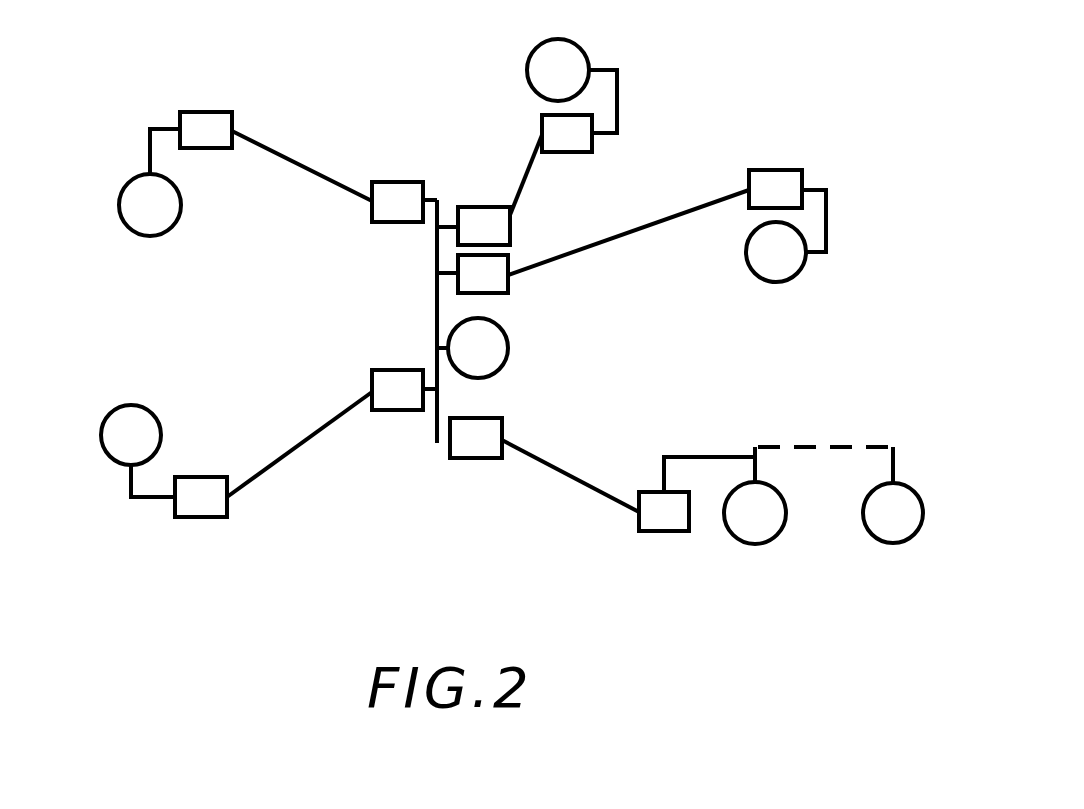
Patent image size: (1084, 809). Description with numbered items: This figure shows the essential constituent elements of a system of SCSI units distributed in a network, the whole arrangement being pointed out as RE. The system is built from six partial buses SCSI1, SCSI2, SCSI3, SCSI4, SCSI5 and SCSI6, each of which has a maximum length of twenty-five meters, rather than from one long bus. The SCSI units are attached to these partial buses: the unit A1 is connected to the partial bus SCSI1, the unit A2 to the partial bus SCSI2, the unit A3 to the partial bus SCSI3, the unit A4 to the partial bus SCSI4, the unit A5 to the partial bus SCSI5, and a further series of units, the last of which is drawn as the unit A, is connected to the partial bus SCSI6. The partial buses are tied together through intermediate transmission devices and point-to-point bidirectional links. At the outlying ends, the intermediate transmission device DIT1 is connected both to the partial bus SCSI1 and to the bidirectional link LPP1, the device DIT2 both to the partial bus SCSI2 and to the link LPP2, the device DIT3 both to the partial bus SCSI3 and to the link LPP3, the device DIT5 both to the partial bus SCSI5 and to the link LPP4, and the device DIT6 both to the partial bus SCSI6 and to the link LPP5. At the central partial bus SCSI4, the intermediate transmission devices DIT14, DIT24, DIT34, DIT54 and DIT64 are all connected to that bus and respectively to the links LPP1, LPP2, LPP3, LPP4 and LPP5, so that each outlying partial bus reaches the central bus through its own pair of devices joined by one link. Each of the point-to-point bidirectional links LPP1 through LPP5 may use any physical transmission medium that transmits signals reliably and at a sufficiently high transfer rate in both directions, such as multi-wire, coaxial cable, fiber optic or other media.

The partial bus SCSI4 is at (430, 286).
The intermediate transmission device DIT2 is at (213, 112).
The intermediate transmission device DIT24 is at (386, 182).
The intermediate transmission device DIT1 is at (592, 148).
The intermediate transmission device DIT14 is at (510, 238).
The intermediate transmission device DIT5 is at (782, 170).
The intermediate transmission device DIT54 is at (508, 286).
The intermediate transmission device DIT34 is at (394, 370).
The intermediate transmission device DIT64 is at (488, 418).
The intermediate transmission device DIT3 is at (205, 517).
The intermediate transmission device DIT6 is at (650, 531).
The point-to-point bidirectional link LPP2 is at (235, 130).
The point-to-point bidirectional link LPP1 is at (536, 155).
The point-to-point bidirectional link LPP4 is at (628, 243).
The point-to-point bidirectional link LPP3 is at (305, 440).
The point-to-point bidirectional link LPP5 is at (575, 482).
The SCSI unit A1 is at (558, 70).
The SCSI unit A2 is at (150, 205).
The SCSI unit A3 is at (131, 435).
The SCSI unit A4 is at (478, 348).
The SCSI unit A5 is at (776, 252).
The SCSI unit A is at (893, 513).
The partial bus SCSI2 is at (140, 157).
The partial bus SCSI1 is at (617, 92).
The partial bus SCSI5 is at (826, 222).
The partial bus SCSI3 is at (140, 500).
The partial bus SCSI6 is at (720, 457).
The network RE is at (738, 352).